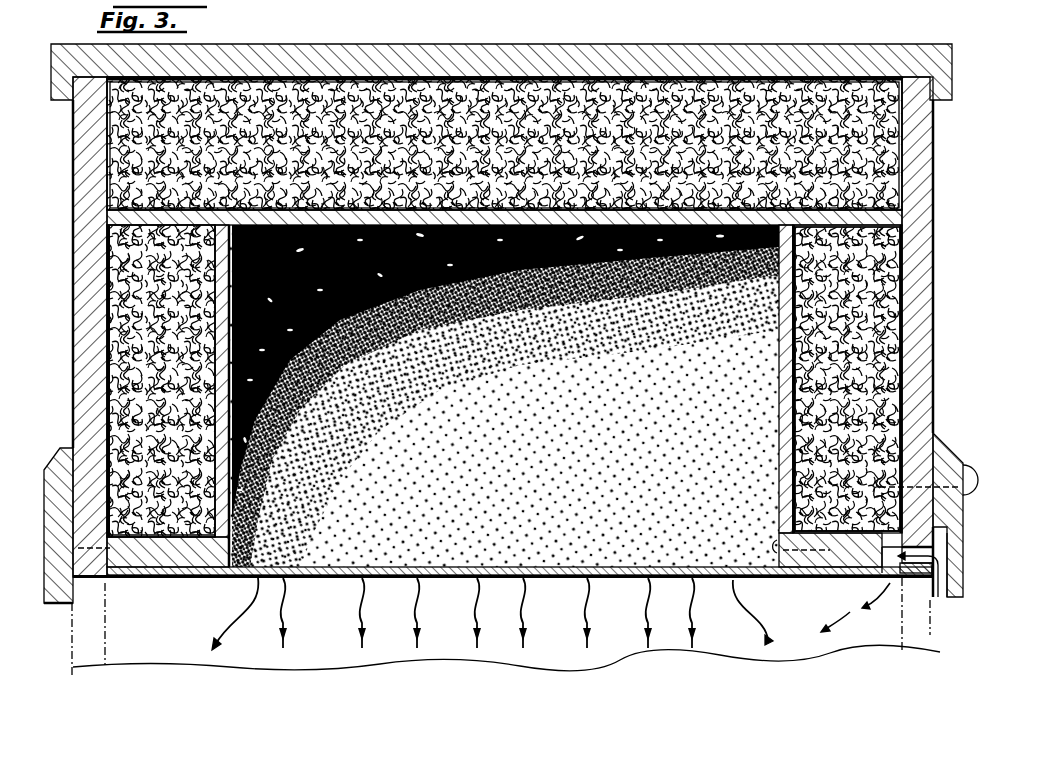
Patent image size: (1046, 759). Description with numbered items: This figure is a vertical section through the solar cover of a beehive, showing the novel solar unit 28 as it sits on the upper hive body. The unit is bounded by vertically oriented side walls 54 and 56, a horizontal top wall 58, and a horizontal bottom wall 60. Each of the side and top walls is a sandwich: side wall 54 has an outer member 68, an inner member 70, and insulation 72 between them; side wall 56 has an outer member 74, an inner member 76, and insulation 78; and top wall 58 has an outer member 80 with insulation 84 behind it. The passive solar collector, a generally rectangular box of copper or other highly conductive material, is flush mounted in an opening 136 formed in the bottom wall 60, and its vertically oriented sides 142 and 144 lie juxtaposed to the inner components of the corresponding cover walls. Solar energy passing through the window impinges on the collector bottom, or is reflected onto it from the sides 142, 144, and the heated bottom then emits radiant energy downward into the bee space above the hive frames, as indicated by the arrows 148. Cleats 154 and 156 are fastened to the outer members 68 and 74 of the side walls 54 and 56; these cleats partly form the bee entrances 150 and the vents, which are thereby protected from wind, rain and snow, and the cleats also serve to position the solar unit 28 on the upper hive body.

The solar unit 28 is at (935, 386).
The side wall 54 is at (73, 163).
The side wall 56 is at (933, 183).
The top wall 58 is at (588, 44).
The bottom wall 60 is at (140, 575).
The outer member 68 is at (73, 238).
The inner member 70 is at (228, 560).
The insulation 72 is at (108, 332).
The outer member 74 is at (933, 235).
The inner member 76 is at (803, 520).
The insulation 78 is at (876, 366).
The outer member 80 is at (700, 44).
The insulation 84 is at (790, 87).
The opening 136 is at (215, 515).
The side 142 is at (265, 578).
The side 144 is at (777, 527).
The arrows 148 is at (292, 590).
The bee entrances 150 is at (922, 584).
The cleat 154 is at (60, 605).
The cleat 156 is at (940, 596).